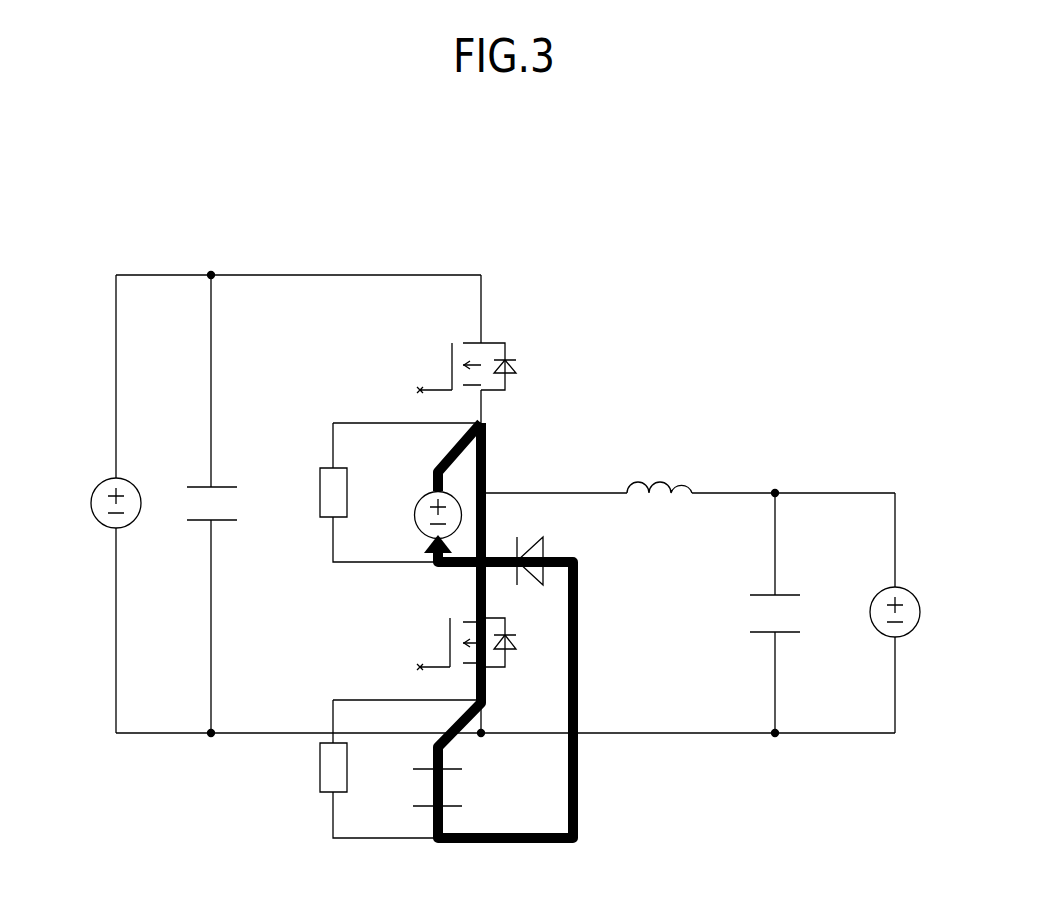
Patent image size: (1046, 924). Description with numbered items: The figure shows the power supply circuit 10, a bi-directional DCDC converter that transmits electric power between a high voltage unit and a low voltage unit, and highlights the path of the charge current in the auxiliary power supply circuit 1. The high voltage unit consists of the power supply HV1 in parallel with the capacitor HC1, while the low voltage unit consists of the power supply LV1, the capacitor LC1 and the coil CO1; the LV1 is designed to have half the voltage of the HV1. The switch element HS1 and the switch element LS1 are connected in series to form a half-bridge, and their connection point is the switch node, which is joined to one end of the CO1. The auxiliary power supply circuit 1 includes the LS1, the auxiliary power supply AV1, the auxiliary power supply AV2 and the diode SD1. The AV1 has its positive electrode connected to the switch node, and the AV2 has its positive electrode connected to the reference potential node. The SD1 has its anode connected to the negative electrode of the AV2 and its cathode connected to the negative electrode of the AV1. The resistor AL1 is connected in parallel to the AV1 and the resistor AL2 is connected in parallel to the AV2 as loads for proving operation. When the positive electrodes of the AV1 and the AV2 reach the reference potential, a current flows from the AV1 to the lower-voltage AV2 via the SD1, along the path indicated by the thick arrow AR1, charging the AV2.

The power supply circuit 10 is at (861, 276).
The auxiliary power supply circuit 1 is at (611, 822).
The power supply HV1 is at (98, 486).
The capacitor HC1 is at (204, 486).
The resistor AL1 is at (320, 490).
The switch element HS1 is at (512, 366).
The switch element LS1 is at (514, 642).
The arrow AR1 is at (579, 680).
The auxiliary power supply AV1 is at (420, 532).
The diode SD1 is at (543, 547).
The coil CO1 is at (682, 482).
The capacitor LC1 is at (763, 594).
The power supply LV1 is at (912, 595).
The resistor AL2 is at (320, 769).
The auxiliary power supply AV2 is at (455, 808).